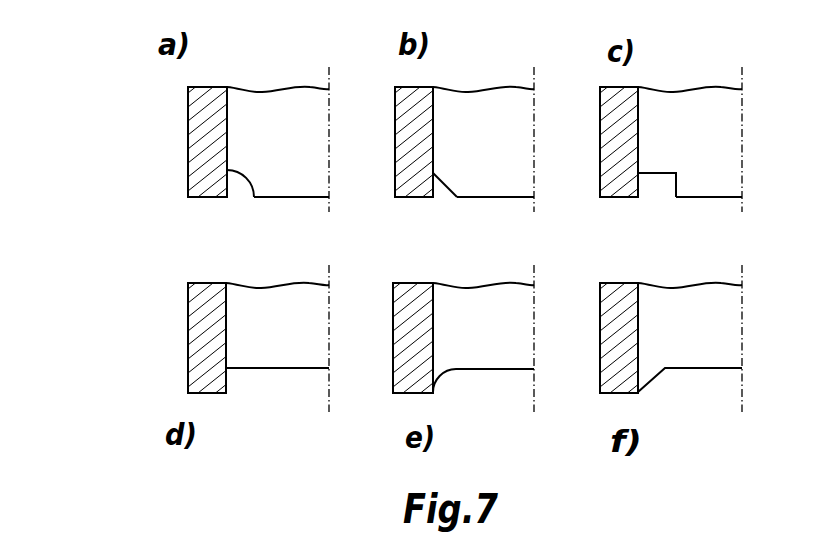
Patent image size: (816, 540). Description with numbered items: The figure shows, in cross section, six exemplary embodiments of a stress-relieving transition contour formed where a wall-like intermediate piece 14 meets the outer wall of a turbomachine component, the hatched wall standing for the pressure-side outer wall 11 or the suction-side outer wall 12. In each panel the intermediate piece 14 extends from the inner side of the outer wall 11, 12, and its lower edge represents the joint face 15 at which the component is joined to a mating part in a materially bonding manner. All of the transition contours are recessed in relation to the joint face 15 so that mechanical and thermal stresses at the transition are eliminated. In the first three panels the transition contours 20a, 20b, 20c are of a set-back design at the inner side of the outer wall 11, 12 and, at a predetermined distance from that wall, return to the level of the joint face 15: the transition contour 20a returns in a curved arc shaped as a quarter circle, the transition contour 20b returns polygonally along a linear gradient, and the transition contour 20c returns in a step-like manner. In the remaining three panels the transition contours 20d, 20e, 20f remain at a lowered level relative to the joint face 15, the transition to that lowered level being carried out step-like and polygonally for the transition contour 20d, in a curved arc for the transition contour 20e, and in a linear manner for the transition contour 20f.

The pressure-side outer wall 11 is at (128, 142).
The suction-side outer wall 12 is at (198, 153).
The intermediate piece 14 is at (273, 112).
The joint face 15 is at (203, 201).
The transition contour 20a is at (237, 193).
The transition contour 20b is at (441, 200).
The transition contour 20c is at (654, 192).
The transition contour 20d is at (292, 379).
The transition contour 20e is at (501, 383).
The transition contour 20f is at (709, 377).